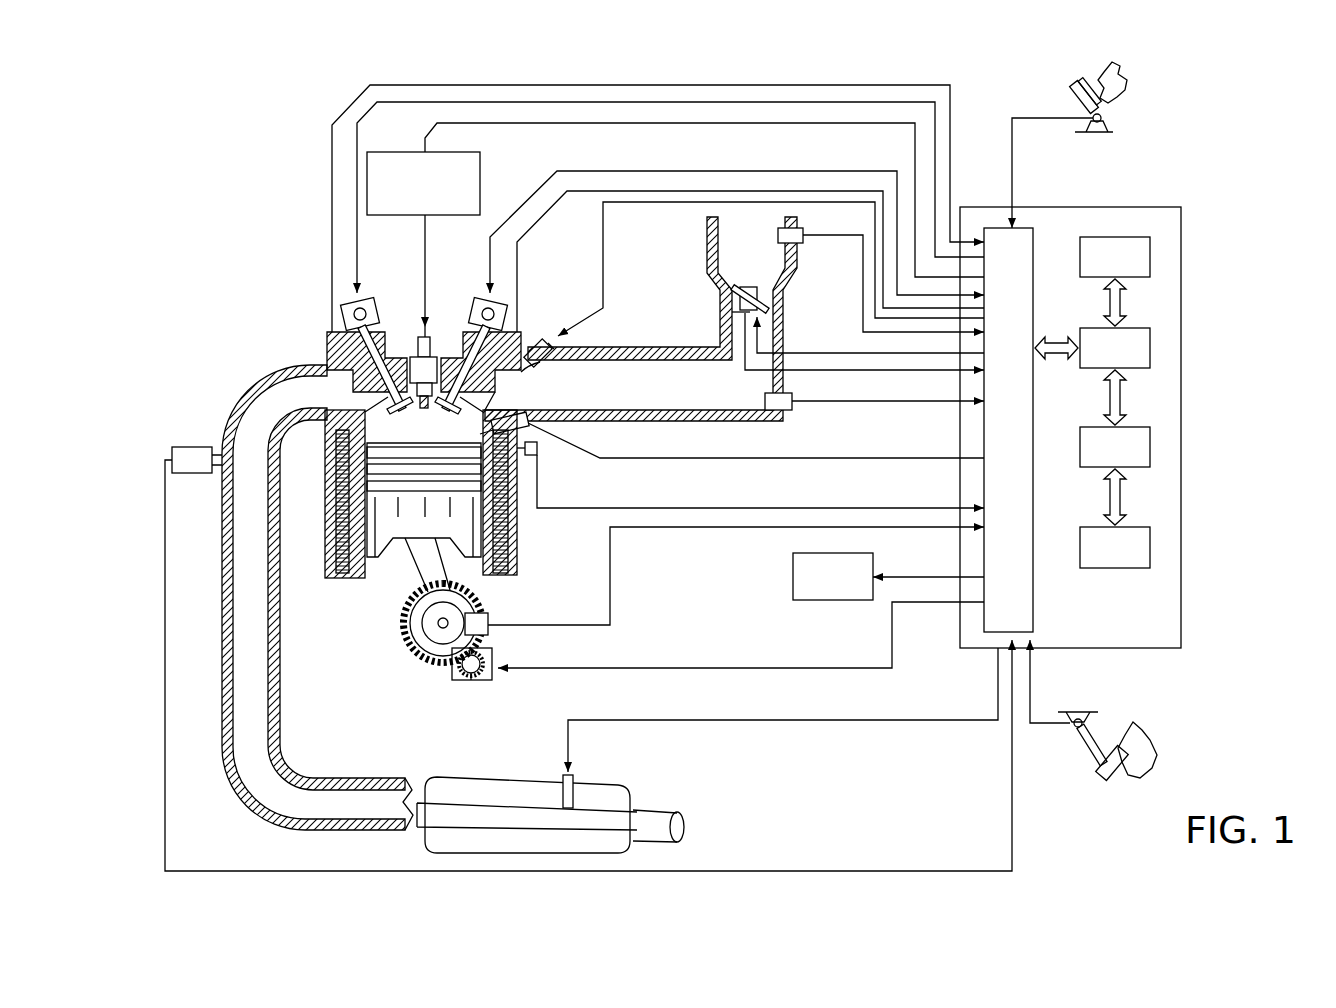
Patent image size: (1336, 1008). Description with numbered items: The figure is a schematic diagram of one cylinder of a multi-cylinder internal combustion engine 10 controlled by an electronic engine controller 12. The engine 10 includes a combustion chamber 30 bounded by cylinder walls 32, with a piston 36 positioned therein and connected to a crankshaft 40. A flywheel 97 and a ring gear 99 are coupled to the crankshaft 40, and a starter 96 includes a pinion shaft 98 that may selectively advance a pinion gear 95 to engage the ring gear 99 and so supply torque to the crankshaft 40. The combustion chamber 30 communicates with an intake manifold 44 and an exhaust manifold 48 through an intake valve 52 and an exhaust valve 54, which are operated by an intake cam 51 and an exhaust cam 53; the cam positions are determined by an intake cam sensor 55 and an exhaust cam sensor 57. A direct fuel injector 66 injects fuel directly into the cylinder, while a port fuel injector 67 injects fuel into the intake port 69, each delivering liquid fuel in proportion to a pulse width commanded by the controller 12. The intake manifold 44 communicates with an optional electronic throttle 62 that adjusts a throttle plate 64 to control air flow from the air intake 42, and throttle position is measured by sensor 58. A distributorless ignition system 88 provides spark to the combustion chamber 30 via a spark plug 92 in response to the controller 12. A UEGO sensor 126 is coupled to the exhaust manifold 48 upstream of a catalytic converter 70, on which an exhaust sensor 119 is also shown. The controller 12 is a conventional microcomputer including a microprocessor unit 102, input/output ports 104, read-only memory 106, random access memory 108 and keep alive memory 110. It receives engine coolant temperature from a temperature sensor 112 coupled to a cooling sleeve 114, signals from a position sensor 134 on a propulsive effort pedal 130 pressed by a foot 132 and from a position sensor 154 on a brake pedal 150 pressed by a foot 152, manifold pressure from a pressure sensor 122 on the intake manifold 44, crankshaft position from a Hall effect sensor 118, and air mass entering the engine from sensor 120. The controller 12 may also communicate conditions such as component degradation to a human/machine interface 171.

The internal combustion engine 10 is at (262, 288).
The electronic engine controller 12 is at (1180, 208).
The combustion chamber 30 is at (355, 537).
The cylinder walls 32 is at (368, 565).
The piston 36 is at (404, 580).
The crankshaft 40 is at (428, 654).
The air intake 42 is at (737, 262).
The intake manifold 44 is at (679, 395).
The exhaust manifold 48 is at (282, 401).
The intake cam 51 is at (482, 303).
The intake valve 52 is at (486, 402).
The exhaust cam 53 is at (357, 303).
The exhaust valve 54 is at (328, 372).
The intake cam sensor 55 is at (503, 324).
The exhaust cam sensor 57 is at (347, 322).
The throttle position sensor 58 is at (731, 314).
The electronic throttle 62 is at (770, 296).
The throttle plate 64 is at (728, 291).
The direct fuel injector 66 is at (527, 432).
The port fuel injector 67 is at (546, 344).
The intake port 69 is at (510, 404).
The catalytic converter 70 is at (445, 778).
The distributorless ignition system 88 is at (381, 152).
The spark plug 92 is at (428, 338).
The pinion gear 95 is at (484, 683).
The starter 96 is at (490, 681).
The flywheel 97 is at (420, 622).
The pinion shaft 98 is at (468, 677).
The ring gear 99 is at (436, 666).
The microprocessor unit 102 is at (1150, 347).
The input/output ports 104 is at (1034, 236).
The read-only memory 106 is at (1150, 252).
The random access memory 108 is at (1150, 448).
The keep alive memory 110 is at (1150, 546).
The temperature sensor 112 is at (538, 457).
The cooling sleeve 114 is at (518, 528).
The Hall effect sensor 118 is at (488, 617).
The exhaust temperature sensor 119 is at (575, 781).
The air mass sensor 120 is at (803, 241).
The pressure sensor 122 is at (788, 411).
The UEGO sensor 126 is at (172, 453).
The propulsive effort pedal 130 is at (1076, 96).
The foot 132 is at (1126, 82).
The position sensor 134 is at (1107, 120).
The brake pedal 150 is at (1092, 772).
The foot 152 is at (1130, 738).
The position sensor 154 is at (1072, 718).
The human/machine interface 171 is at (833, 576).